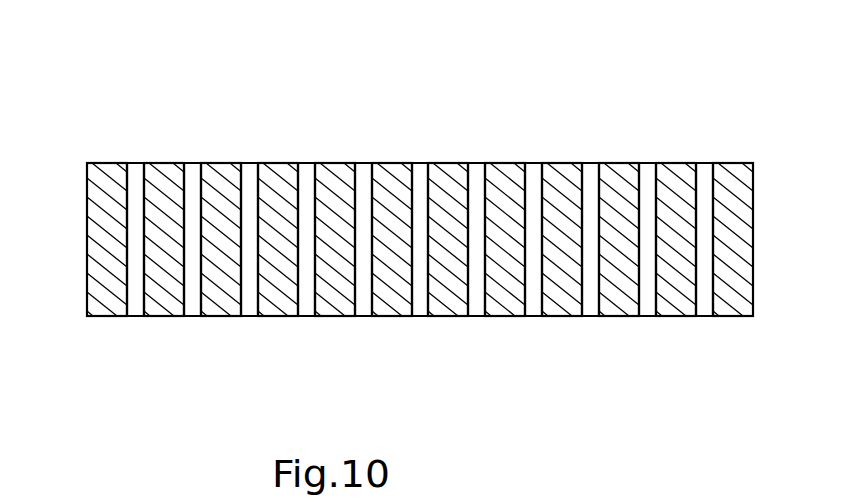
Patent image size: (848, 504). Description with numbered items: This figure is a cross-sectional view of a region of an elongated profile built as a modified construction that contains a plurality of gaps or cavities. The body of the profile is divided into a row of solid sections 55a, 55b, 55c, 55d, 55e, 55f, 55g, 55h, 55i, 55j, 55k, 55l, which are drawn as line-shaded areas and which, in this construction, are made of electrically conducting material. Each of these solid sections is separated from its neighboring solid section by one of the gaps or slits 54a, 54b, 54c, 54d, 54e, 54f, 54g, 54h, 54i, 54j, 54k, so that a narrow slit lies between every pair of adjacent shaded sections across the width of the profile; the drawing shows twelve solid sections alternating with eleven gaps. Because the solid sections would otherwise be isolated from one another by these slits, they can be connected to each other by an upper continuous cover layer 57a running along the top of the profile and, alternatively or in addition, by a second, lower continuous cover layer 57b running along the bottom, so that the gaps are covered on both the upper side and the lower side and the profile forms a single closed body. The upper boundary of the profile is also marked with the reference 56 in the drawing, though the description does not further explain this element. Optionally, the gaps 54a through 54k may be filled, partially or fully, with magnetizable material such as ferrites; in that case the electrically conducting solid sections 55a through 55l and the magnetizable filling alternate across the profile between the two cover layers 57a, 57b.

The gap 54a is at (133, 168).
The gap 54b is at (192, 305).
The gap 54c is at (247, 170).
The gap 54d is at (307, 310).
The gap 54e is at (365, 170).
The gap 54f is at (418, 308).
The gap 54g is at (477, 170).
The gap 54h is at (533, 303).
The gap 54i is at (592, 170).
The gap 54j is at (650, 308).
The gap 54k is at (703, 178).
The solid section 55a is at (108, 316).
The solid section 55b is at (167, 163).
The solid section 55c is at (223, 316).
The solid section 55d is at (277, 163).
The solid section 55e is at (338, 316).
The solid section 55f is at (398, 163).
The solid section 55g is at (453, 316).
The solid section 55h is at (508, 163).
The solid section 55i is at (567, 316).
The solid section 55j is at (615, 317).
The solid section 55k is at (673, 165).
The solid section 55l is at (752, 230).
The top surface 56 is at (560, 163).
The upper continuous cover layer 57a is at (93, 163).
The lower continuous cover layer 57b is at (88, 316).